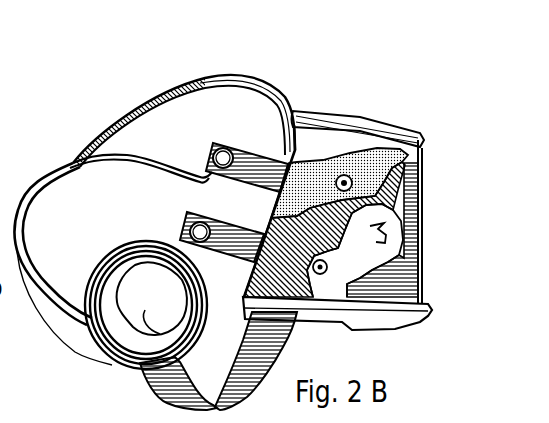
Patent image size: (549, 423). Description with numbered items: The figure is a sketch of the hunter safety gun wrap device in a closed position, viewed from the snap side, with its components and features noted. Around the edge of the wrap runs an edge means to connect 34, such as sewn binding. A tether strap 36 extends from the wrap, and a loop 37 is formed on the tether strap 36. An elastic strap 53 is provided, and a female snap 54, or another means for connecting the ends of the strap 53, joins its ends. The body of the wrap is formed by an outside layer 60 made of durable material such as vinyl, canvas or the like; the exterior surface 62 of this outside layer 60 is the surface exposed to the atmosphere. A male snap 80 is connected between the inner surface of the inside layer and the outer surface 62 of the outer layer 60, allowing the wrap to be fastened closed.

The edge means to connect 34 is at (365, 130).
The tether strap 36 is at (57, 325).
The loop 37 is at (163, 83).
The elastic strap 53 is at (281, 158).
The female snap 54 is at (217, 143).
The outside layer 60 is at (444, 280).
The exterior surface 62 is at (365, 229).
The male snap 80 is at (325, 273).